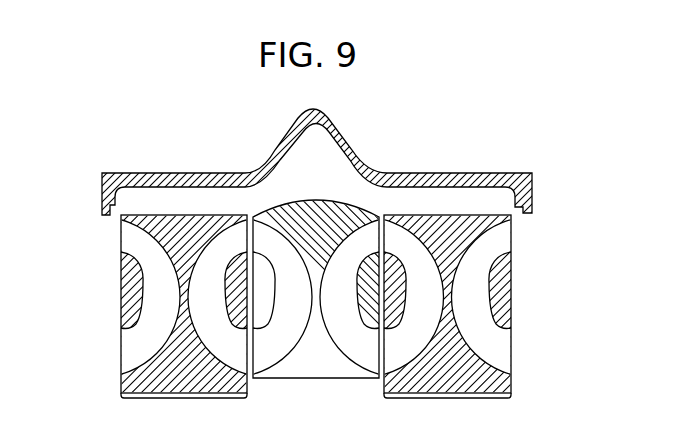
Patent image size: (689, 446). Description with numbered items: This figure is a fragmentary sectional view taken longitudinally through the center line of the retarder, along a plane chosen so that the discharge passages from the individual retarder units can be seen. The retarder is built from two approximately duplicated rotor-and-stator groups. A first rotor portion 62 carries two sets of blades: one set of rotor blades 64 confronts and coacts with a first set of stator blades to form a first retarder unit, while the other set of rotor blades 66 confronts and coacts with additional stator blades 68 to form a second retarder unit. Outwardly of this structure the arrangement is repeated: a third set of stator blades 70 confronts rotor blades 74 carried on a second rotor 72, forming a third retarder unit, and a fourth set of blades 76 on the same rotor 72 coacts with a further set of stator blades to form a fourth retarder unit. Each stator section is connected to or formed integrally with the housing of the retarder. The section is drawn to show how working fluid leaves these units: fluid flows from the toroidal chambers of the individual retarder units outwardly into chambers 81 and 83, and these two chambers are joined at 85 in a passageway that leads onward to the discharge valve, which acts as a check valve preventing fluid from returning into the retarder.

The first rotor portion 62 is at (344, 320).
The rotor blades 64 is at (502, 353).
The rotor blades 66 is at (400, 352).
The stator blades 68 is at (370, 355).
The stator blades 70 is at (267, 352).
The second rotor 72 is at (344, 320).
The rotor blades 74 is at (234, 352).
The rotor blades 76 is at (128, 351).
The chamber 81 is at (450, 193).
The chamber 83 is at (172, 197).
The junction of chambers 85 is at (323, 152).